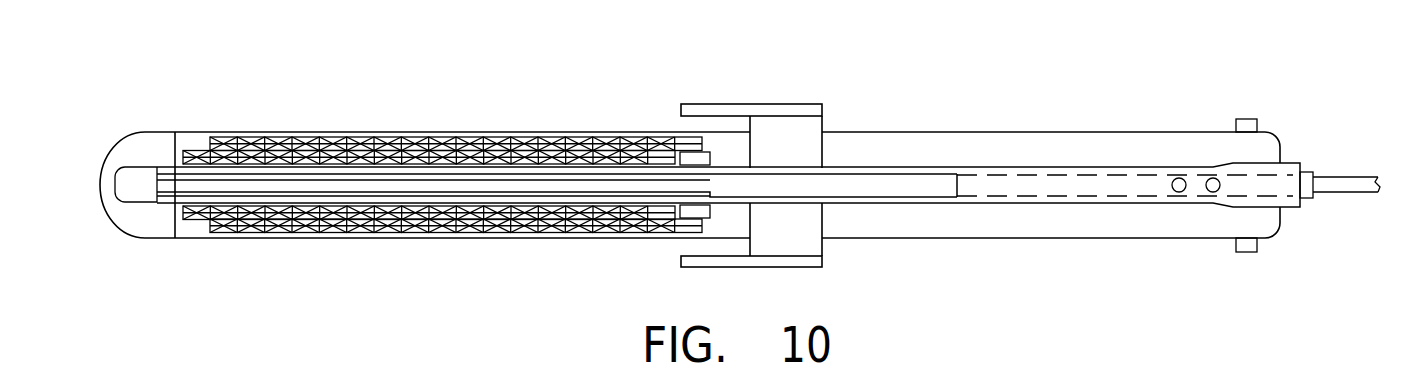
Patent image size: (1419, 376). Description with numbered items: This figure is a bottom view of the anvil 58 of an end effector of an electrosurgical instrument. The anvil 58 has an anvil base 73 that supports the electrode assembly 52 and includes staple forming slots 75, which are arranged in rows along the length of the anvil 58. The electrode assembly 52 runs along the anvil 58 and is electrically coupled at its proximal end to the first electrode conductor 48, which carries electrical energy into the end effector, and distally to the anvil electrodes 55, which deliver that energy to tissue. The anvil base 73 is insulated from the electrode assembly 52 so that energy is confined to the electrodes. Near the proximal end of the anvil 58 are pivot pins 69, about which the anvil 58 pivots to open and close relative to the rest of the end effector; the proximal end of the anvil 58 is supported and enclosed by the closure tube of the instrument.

The first electrode conductor 48 is at (1343, 177).
The electrode assembly 52 is at (858, 168).
The anvil electrodes 55 is at (230, 175).
The anvil 58 is at (370, 108).
The pivot pins 69 is at (1242, 118).
The anvil base 73 is at (143, 140).
The staple forming slots 75 is at (440, 140).